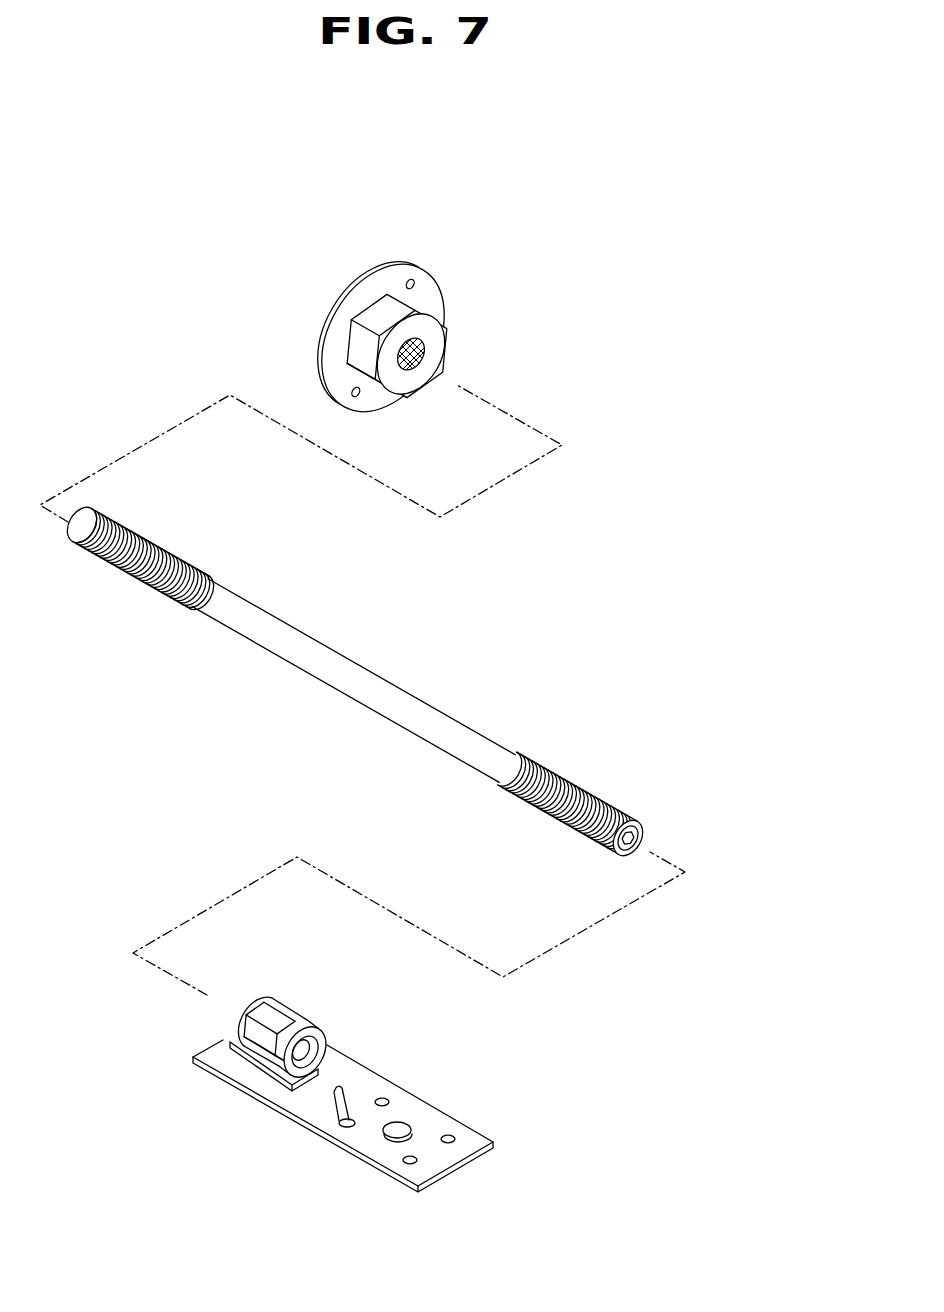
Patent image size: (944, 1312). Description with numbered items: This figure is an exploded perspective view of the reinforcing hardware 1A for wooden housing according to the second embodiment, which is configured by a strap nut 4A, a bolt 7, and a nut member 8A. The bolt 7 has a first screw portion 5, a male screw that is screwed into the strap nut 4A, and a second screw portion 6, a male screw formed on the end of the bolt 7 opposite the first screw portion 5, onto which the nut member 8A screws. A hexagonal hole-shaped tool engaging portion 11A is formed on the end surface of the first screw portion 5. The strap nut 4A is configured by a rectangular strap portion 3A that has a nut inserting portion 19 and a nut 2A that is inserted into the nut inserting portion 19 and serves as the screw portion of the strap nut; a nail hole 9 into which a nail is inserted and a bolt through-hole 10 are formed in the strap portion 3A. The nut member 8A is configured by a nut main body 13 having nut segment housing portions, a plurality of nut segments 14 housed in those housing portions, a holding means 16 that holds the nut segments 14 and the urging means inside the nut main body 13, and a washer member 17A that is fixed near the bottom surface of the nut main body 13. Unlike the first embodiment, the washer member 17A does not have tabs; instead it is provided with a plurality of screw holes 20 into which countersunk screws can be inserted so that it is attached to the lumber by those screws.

The reinforcing hardware 1A is at (640, 258).
The nut member 8A is at (421, 300).
The washer member 17A is at (343, 352).
The screw holes 20 is at (412, 287).
The nut main body 13 is at (446, 330).
The holding means 16 is at (446, 350).
The nut segments 14 is at (432, 360).
The bolt 7 is at (408, 666).
The second screw portion 6 is at (149, 539).
The first screw portion 5 is at (581, 782).
The tool engaging portion 11A is at (648, 834).
The strap nut 4A is at (336, 1091).
The nut 2A is at (260, 1040).
The strap portion 3A is at (290, 1112).
The nut inserting portion 19 is at (300, 1010).
The bolt through-hole 10 is at (395, 1124).
The nail hole 9 is at (340, 1090).